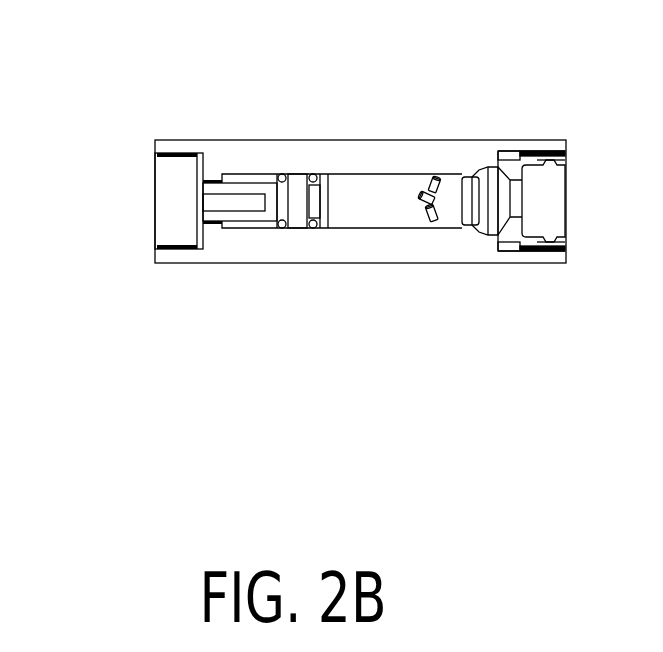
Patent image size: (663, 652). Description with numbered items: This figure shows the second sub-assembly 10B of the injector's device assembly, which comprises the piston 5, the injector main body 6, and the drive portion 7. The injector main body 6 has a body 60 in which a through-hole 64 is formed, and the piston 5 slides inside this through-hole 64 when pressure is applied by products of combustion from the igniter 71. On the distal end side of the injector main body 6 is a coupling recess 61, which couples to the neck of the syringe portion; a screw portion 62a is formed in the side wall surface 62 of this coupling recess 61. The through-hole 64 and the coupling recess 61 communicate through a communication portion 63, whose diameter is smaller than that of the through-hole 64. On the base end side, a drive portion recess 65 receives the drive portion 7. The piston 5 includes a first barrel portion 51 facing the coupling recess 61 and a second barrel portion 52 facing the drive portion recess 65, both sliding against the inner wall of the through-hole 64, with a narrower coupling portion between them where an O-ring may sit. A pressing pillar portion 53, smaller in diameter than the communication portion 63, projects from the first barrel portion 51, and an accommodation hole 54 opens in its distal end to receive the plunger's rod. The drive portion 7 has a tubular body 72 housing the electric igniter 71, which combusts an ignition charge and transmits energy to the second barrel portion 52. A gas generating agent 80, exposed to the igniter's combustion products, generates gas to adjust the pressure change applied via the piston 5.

The sub-assembly 10B is at (470, 418).
The piston 5 is at (240, 82).
The first barrel portion 51 is at (297, 185).
The second barrel portion 52 is at (325, 177).
The pressing pillar portion 53 is at (255, 193).
The accommodation hole 54 is at (243, 198).
The injector main body 6 is at (23, 280).
The body 60 is at (248, 248).
The coupling recess 61 is at (163, 235).
The side wall surface 62 is at (197, 175).
The screw portion 62a is at (168, 156).
The communication portion 63 is at (213, 223).
The through-hole 64 is at (382, 228).
The drive portion recess 65 is at (520, 157).
The drive portion 7 is at (558, 330).
The igniter 71 is at (472, 220).
The body 72 is at (529, 241).
The gas generating agent 80 is at (428, 177).